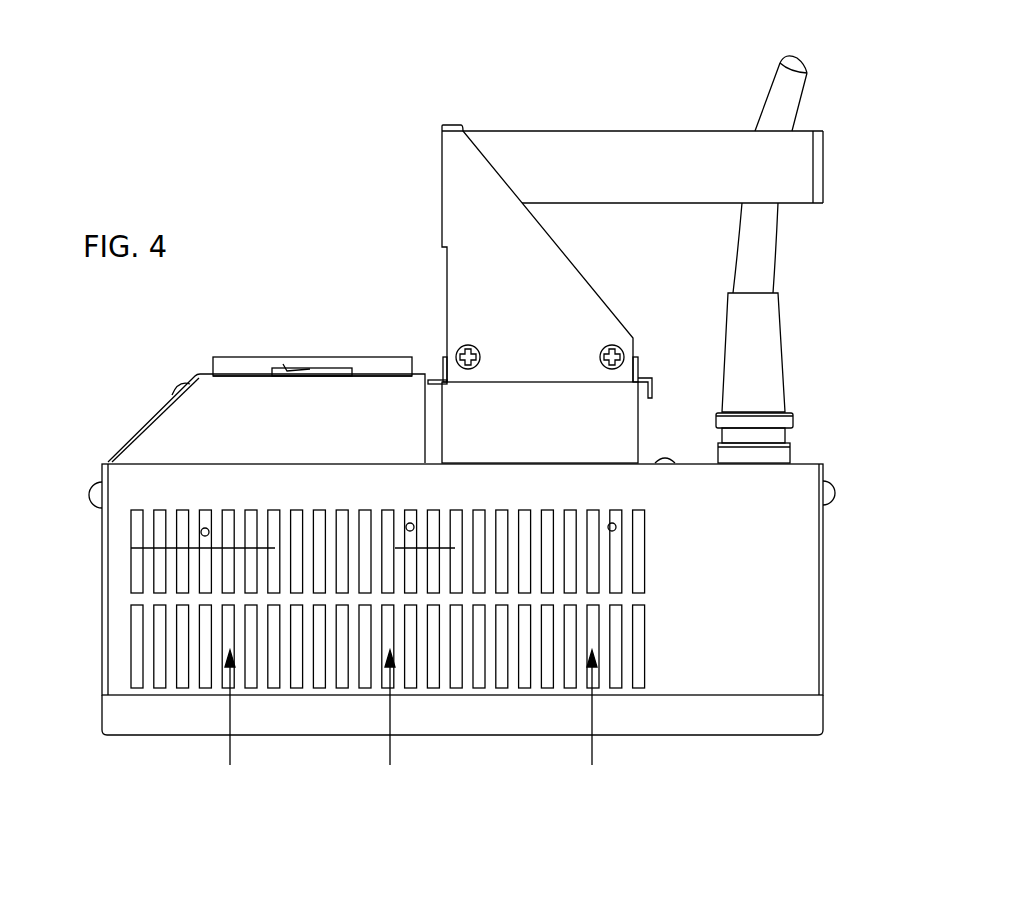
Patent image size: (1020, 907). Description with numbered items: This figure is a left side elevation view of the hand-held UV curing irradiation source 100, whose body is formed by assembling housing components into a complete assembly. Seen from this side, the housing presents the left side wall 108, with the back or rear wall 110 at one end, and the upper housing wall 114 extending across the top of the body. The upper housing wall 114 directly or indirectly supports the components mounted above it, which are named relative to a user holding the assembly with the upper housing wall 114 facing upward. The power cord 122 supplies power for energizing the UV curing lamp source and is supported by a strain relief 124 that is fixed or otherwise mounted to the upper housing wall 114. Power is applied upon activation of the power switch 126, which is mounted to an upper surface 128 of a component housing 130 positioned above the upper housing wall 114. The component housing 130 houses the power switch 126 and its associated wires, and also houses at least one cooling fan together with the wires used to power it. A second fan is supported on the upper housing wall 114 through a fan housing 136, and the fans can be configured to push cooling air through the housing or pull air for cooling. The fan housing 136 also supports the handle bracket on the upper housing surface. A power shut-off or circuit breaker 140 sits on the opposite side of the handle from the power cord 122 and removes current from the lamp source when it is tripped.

The UV curing irradiation source 100 is at (252, 248).
The left side wall 108 is at (672, 673).
The back or rear wall 110 is at (825, 527).
The upper housing wall 114 is at (805, 462).
The power cord 122 is at (768, 93).
The strain relief 124 is at (771, 318).
The power switch 126 is at (287, 363).
The upper surface 128 is at (237, 377).
The component housing 130 is at (125, 420).
The fan housing 136 is at (620, 420).
The circuit breaker 140 is at (757, 420).